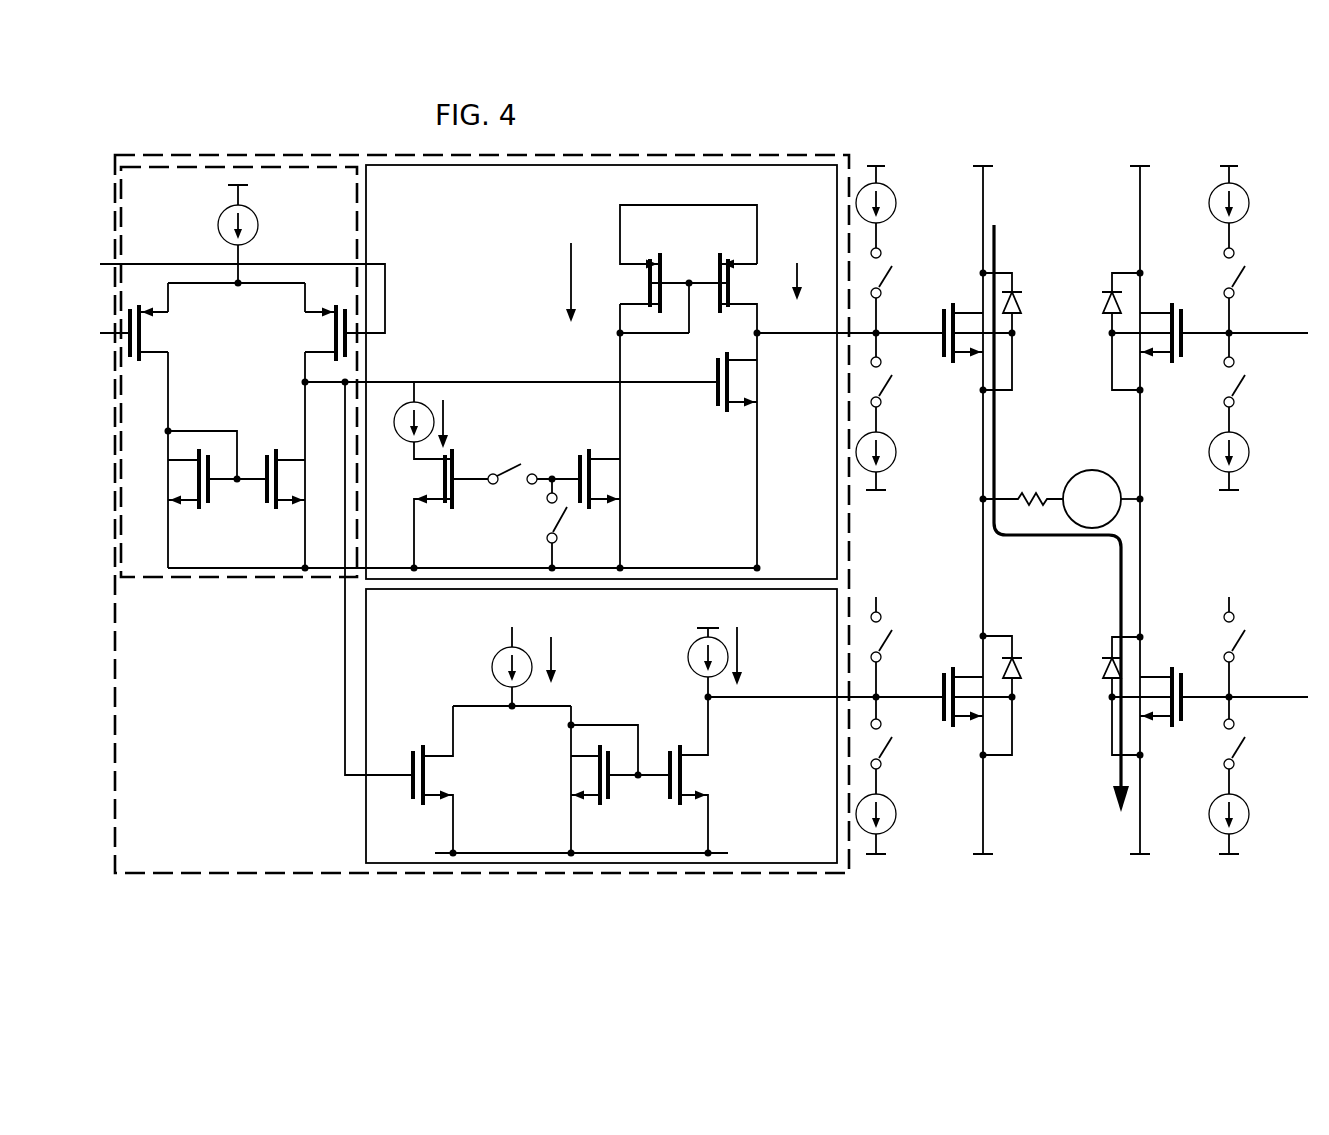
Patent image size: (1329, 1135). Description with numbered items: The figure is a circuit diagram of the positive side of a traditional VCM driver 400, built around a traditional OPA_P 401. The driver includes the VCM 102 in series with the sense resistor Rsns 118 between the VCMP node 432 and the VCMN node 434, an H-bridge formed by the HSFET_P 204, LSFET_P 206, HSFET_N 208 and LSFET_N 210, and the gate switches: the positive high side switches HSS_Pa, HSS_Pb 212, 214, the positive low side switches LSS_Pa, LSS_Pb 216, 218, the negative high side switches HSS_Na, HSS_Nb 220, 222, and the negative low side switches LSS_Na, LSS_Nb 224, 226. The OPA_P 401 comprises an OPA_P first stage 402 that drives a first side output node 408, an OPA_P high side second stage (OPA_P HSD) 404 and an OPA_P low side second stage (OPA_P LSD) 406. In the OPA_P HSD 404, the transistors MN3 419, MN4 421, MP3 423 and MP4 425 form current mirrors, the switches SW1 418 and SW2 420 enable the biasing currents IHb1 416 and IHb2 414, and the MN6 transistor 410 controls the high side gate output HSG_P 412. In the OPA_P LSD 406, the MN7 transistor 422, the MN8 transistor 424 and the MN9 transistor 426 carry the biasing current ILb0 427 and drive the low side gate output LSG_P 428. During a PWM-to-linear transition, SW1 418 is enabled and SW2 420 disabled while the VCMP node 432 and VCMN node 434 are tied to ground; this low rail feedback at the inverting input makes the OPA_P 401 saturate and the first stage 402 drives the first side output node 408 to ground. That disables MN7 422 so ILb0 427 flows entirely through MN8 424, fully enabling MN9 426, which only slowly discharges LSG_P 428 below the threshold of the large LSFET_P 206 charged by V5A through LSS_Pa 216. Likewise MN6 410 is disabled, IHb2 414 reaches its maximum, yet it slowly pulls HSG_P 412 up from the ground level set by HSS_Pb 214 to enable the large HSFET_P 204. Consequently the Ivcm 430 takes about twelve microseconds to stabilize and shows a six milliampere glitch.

The traditional VCM driver 400 is at (1284, 122).
The traditional OPA_P 401 is at (256, 755).
The OPA_P first stage 402 is at (187, 230).
The OPA_P high side second stage (OPA_P HSD) 404 is at (471, 233).
The OPA_P low side second stage (OPA_P LSD) 406 is at (358, 812).
The first side output node 408 is at (492, 381).
The MN6 transistor 410 is at (716, 405).
The high side gate output (HSG_P) 412 is at (757, 334).
The IHb2 414 is at (803, 272).
The IHb1 416 is at (569, 283).
The switch SW1 418 is at (511, 470).
The MN3 transistor 419 is at (455, 491).
The switch SW2 420 is at (556, 527).
The MN4 transistor 421 is at (570, 468).
The MN7 transistor 422 is at (413, 791).
The MP3 transistor 423 is at (670, 270).
The MN8 transistor 424 is at (610, 791).
The MP4 transistor 425 is at (707, 270).
The MN9 transistor 426 is at (668, 791).
The ILb0 427 is at (554, 659).
The low side gate output (LSG_P) 428 is at (710, 699).
The Ivcm 430 is at (1083, 540).
The VCMP node 432 is at (992, 506).
The VCMN node 434 is at (1146, 496).
The VCM 102 is at (1092, 470).
The Rsns 118 is at (1032, 496).
The HSFET_P 204 is at (1040, 259).
The LSFET_P 206 is at (1010, 623).
The HSFET_N 208 is at (1098, 345).
The LSFET_N 210 is at (1096, 769).
The positive high side switch HSS_Pa 212 is at (893, 273).
The positive high side switch HSS_Pb 214 is at (893, 384).
The positive low side switch LSS_Pa 216 is at (893, 640).
The positive low side switch LSS_Pb 218 is at (893, 747).
The negative high side switch HSS_Na 220 is at (1246, 274).
The negative high side switch HSS_Nb 222 is at (1246, 384).
The negative low side switch LSS_Na 224 is at (1246, 639).
The negative low side switch LSS_Nb 226 is at (1246, 744).